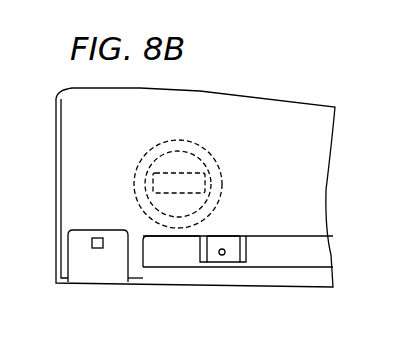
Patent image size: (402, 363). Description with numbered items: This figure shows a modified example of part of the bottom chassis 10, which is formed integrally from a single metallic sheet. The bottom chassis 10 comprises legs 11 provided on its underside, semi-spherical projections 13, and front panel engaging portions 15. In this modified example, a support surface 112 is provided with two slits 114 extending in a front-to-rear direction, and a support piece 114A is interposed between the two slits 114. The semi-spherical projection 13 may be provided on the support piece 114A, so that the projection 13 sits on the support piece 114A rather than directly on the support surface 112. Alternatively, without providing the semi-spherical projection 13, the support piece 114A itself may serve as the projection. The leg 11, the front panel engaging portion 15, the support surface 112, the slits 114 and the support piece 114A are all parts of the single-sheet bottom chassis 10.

The bottom chassis 10 is at (55, 213).
The leg 11 is at (134, 180).
The projection 13 is at (223, 256).
The front panel engaging portion 15 is at (100, 262).
The support surface 112 is at (167, 254).
The slit 114 is at (203, 263).
The support piece 114A is at (222, 238).